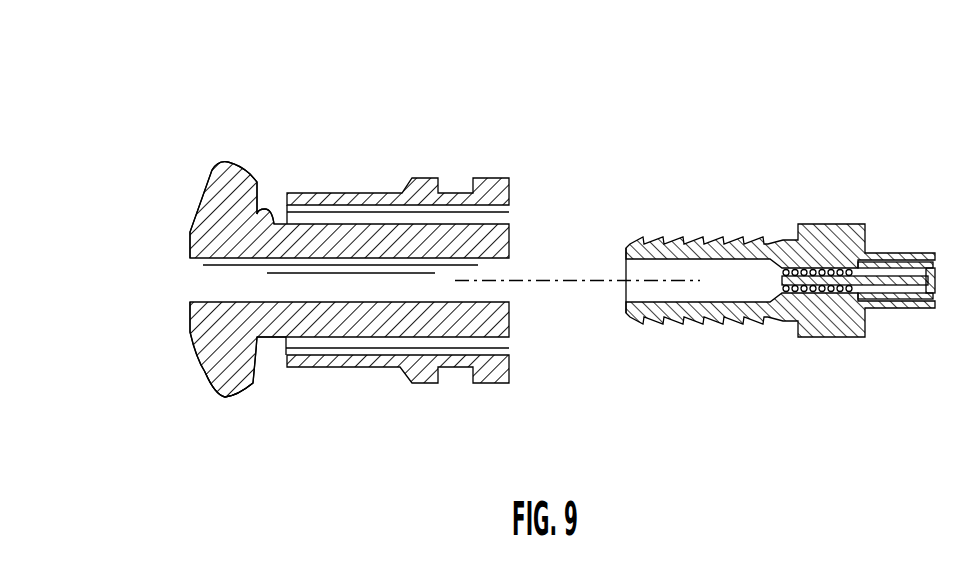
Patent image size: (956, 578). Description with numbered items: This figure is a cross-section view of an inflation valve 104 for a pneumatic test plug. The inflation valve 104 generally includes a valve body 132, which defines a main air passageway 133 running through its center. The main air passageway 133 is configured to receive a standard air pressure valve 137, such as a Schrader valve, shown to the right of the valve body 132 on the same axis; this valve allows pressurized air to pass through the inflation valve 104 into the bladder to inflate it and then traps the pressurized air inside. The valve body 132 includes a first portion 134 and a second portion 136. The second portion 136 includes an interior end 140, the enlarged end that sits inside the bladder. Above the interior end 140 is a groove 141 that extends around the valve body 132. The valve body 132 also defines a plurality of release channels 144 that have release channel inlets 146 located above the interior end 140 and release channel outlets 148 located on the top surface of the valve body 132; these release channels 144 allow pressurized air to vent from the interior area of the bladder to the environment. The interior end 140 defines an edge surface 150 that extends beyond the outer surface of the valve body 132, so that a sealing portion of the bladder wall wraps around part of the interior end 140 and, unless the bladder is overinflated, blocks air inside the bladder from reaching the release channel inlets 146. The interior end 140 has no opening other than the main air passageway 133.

The inflation valve 104 is at (381, 302).
The main air passageway 133 is at (166, 287).
The second portion 136 is at (266, 159).
The first portion 134 is at (521, 166).
The interior end 140 is at (250, 218).
The release channels 144 is at (498, 215).
The release channel inlets 146 is at (267, 353).
The groove 141 is at (284, 350).
The edge surface 150 is at (226, 396).
The valve body 132 is at (409, 403).
The release channel outlets 148 is at (510, 348).
The standard air pressure valve 137 is at (771, 184).